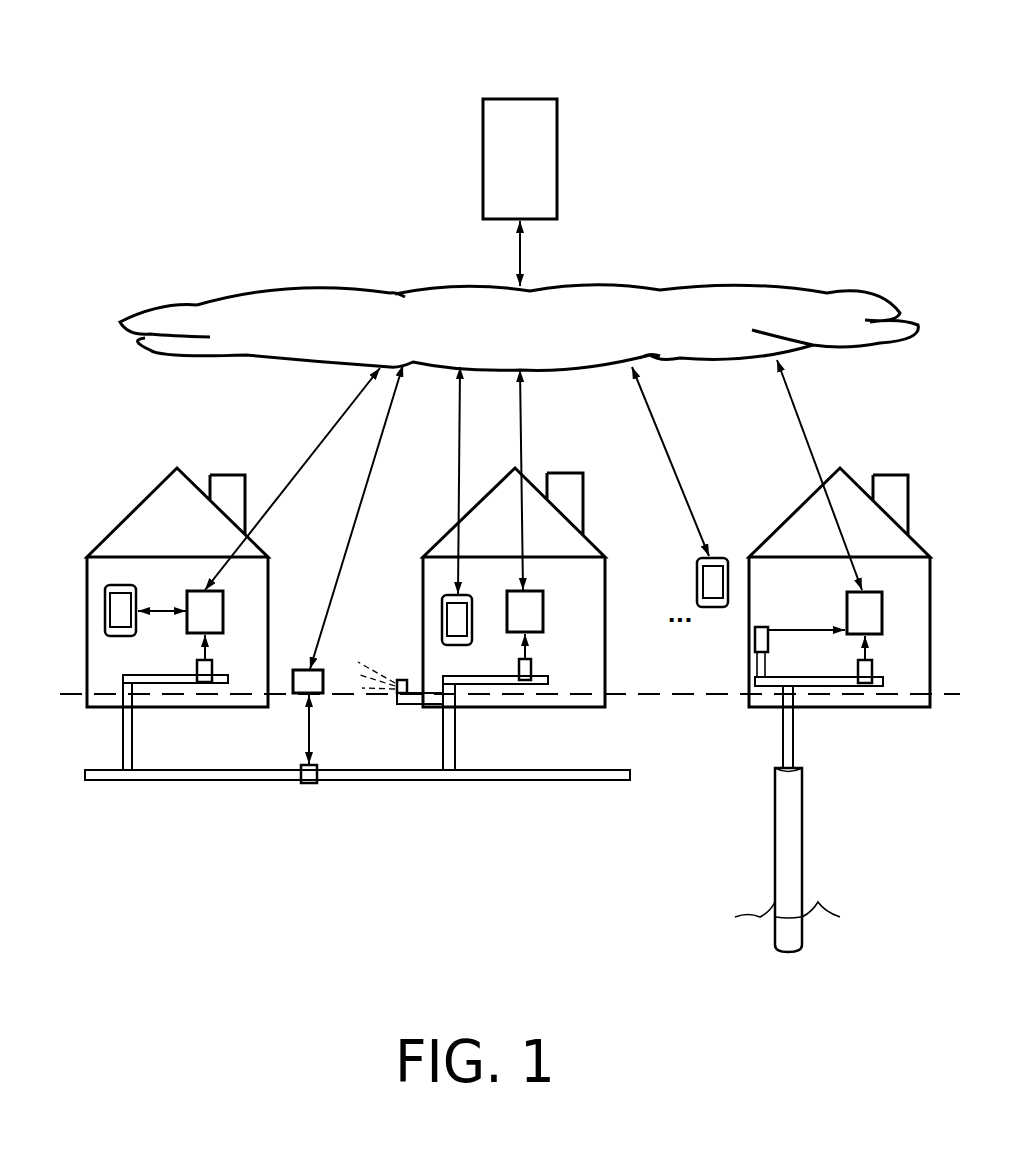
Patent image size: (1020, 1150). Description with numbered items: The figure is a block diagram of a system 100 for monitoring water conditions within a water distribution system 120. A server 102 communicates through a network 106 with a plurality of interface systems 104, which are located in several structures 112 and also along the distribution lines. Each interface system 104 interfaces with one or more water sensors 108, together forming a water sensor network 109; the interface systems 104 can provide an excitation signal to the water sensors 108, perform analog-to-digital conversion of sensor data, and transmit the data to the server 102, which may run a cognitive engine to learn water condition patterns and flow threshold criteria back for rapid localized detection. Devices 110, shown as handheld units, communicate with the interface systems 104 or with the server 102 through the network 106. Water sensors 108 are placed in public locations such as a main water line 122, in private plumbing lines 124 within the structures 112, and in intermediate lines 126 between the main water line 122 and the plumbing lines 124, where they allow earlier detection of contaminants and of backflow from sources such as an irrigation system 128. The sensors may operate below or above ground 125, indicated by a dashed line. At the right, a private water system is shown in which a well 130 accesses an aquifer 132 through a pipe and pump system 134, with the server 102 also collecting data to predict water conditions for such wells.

The system 100 is at (190, 84).
The server 102 is at (537, 173).
The interface system 104 is at (226, 640).
The network 106 is at (541, 339).
The water sensor 108 is at (213, 680).
The water sensor network 109 is at (275, 460).
The device 110 is at (104, 620).
The structure 112 is at (150, 490).
The water distribution system 120 is at (196, 824).
The main water line 122 is at (278, 782).
The plumbing line 124 is at (138, 676).
The ground 125 is at (650, 692).
The intermediate line 126 is at (122, 757).
The irrigation system 128 is at (400, 679).
The well 130 is at (775, 846).
The aquifer 132 is at (742, 917).
The pipe and pump system 134 is at (782, 756).